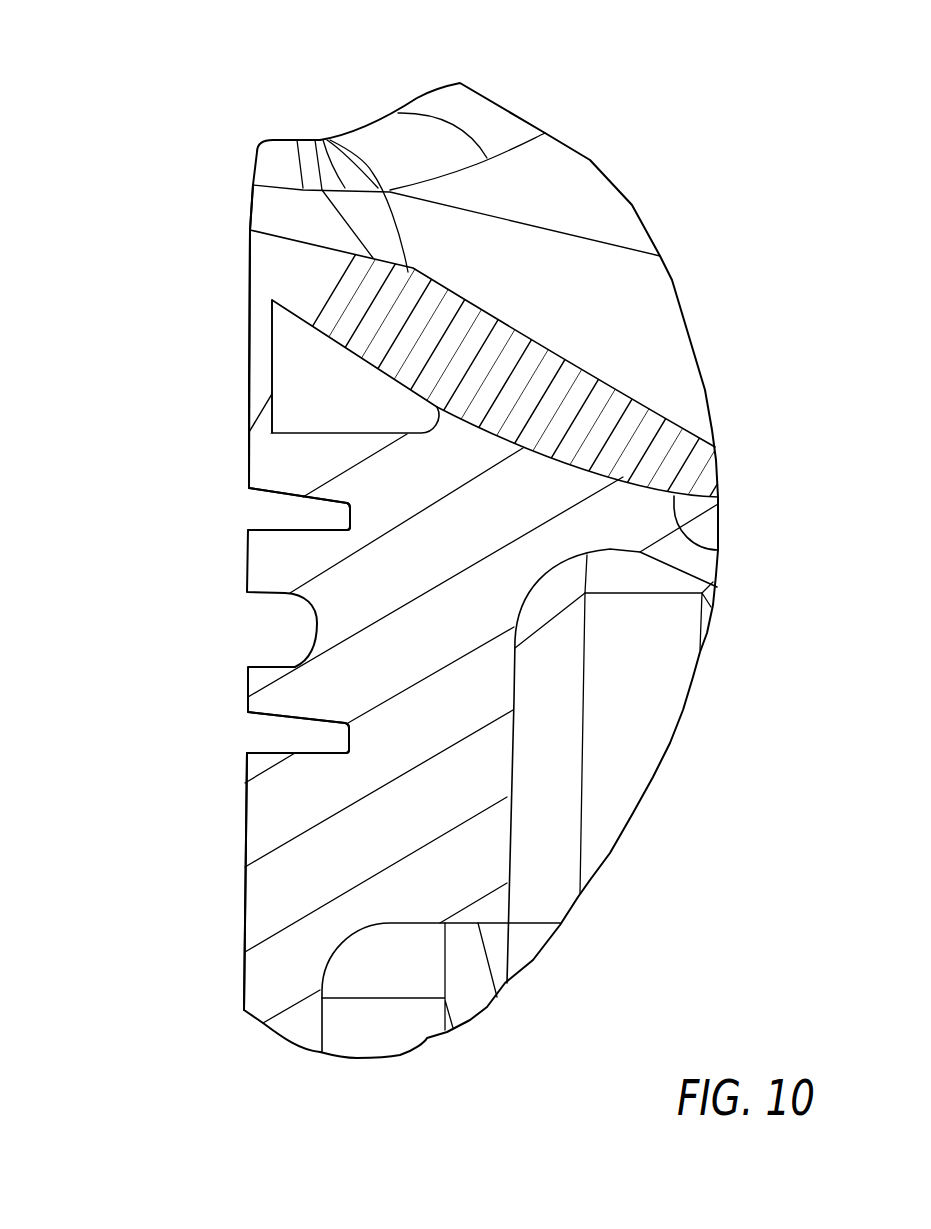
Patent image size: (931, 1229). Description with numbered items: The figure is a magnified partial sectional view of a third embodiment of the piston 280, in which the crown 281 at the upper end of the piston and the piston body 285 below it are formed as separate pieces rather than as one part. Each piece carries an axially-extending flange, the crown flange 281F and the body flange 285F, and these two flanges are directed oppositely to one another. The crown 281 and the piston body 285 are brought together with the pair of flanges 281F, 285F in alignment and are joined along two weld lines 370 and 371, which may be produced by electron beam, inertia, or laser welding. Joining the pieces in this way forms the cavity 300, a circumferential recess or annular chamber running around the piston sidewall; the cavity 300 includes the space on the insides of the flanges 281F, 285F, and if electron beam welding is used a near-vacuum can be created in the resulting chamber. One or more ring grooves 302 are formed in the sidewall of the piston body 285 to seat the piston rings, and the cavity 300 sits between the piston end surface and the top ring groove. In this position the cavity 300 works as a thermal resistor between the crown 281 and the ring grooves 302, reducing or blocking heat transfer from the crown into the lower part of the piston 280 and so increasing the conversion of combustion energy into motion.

The piston 280 is at (166, 827).
The crown 281 is at (334, 108).
The flange of the crown 281F is at (249, 328).
The piston body 285 is at (243, 912).
The flange of the piston body 285F is at (249, 397).
The cavity 300 is at (325, 397).
The ring grooves 302 is at (266, 514).
The weld line 370 is at (718, 550).
The weld line 371 is at (272, 368).